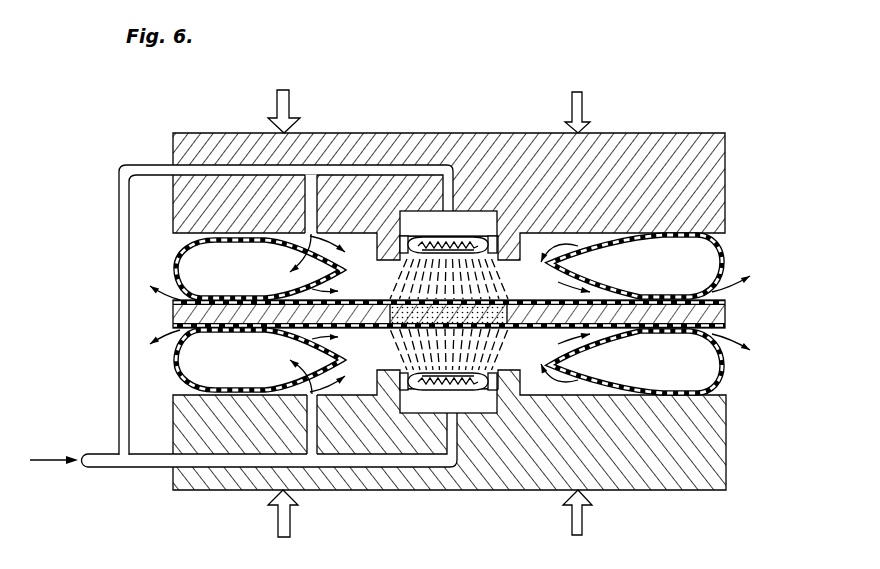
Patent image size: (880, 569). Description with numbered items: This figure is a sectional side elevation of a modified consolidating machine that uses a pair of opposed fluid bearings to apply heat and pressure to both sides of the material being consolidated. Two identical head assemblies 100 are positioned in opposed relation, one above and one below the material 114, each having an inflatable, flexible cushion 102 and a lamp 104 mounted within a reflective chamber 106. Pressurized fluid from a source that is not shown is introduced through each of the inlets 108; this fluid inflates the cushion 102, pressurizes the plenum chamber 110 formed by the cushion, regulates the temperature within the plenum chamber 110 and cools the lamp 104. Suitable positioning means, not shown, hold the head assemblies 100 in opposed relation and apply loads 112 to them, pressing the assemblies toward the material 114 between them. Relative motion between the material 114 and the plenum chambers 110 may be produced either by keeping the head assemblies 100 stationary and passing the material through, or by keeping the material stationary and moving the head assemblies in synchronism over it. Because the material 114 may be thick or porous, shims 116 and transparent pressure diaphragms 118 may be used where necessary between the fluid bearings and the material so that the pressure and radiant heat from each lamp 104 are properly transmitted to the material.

The head assembly 100 is at (192, 131).
The inflatable, flexible cushion 102 is at (716, 250).
The lamp 104 is at (457, 232).
The reflective chamber 106 is at (484, 220).
The inlet 108 is at (127, 164).
The plenum chamber 110 is at (363, 247).
The load 112 is at (290, 102).
The material 114 is at (502, 328).
The shim 116 is at (172, 312).
The transparent pressure diaphragm 118 is at (338, 302).